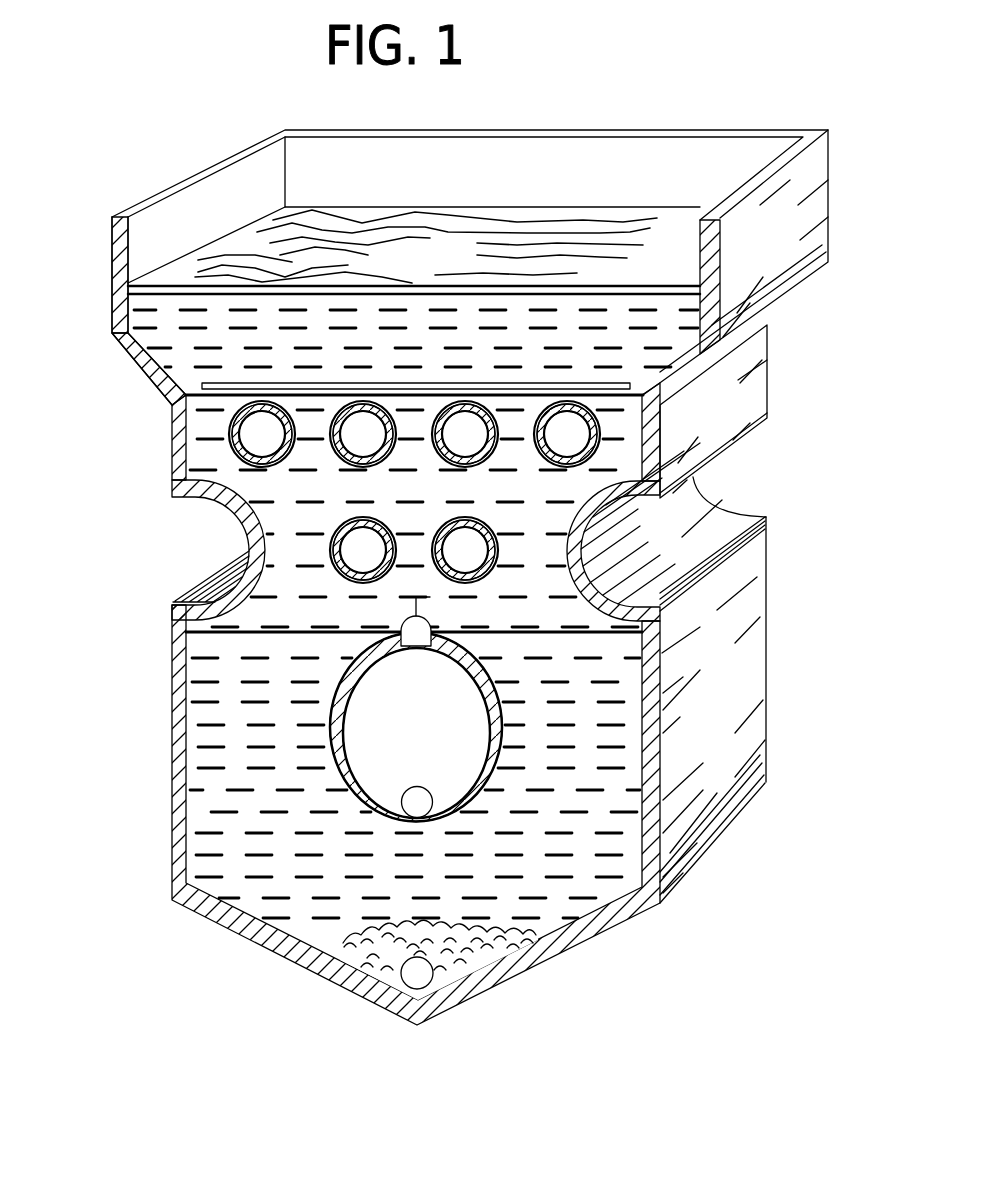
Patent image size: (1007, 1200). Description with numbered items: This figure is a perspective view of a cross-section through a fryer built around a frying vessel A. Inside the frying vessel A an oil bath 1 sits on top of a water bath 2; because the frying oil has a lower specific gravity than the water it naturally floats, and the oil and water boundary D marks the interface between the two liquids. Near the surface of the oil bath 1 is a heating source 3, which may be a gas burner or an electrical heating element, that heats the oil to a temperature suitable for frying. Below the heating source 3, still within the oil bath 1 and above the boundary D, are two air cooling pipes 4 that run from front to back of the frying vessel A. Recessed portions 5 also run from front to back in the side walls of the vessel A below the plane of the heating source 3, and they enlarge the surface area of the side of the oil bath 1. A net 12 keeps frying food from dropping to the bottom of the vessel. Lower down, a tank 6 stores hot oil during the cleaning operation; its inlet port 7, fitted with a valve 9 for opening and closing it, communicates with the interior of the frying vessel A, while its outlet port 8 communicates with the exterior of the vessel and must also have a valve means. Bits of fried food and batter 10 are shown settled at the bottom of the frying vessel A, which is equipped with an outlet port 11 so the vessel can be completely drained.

The frying vessel A is at (833, 162).
The oil bath 1 is at (153, 313).
The water bath 2 is at (207, 862).
The heating source 3 is at (228, 427).
The air cooling pipes 4 is at (337, 527).
The recessed portions 5 is at (213, 575).
The tank 6 is at (393, 765).
The inlet port 7 is at (298, 798).
The outlet port 8 is at (417, 805).
The valve 9 is at (402, 633).
The bits of fried food and batter 10 is at (390, 967).
The outlet port 11 is at (420, 982).
The net 12 is at (225, 384).
The oil and water boundary D is at (600, 633).